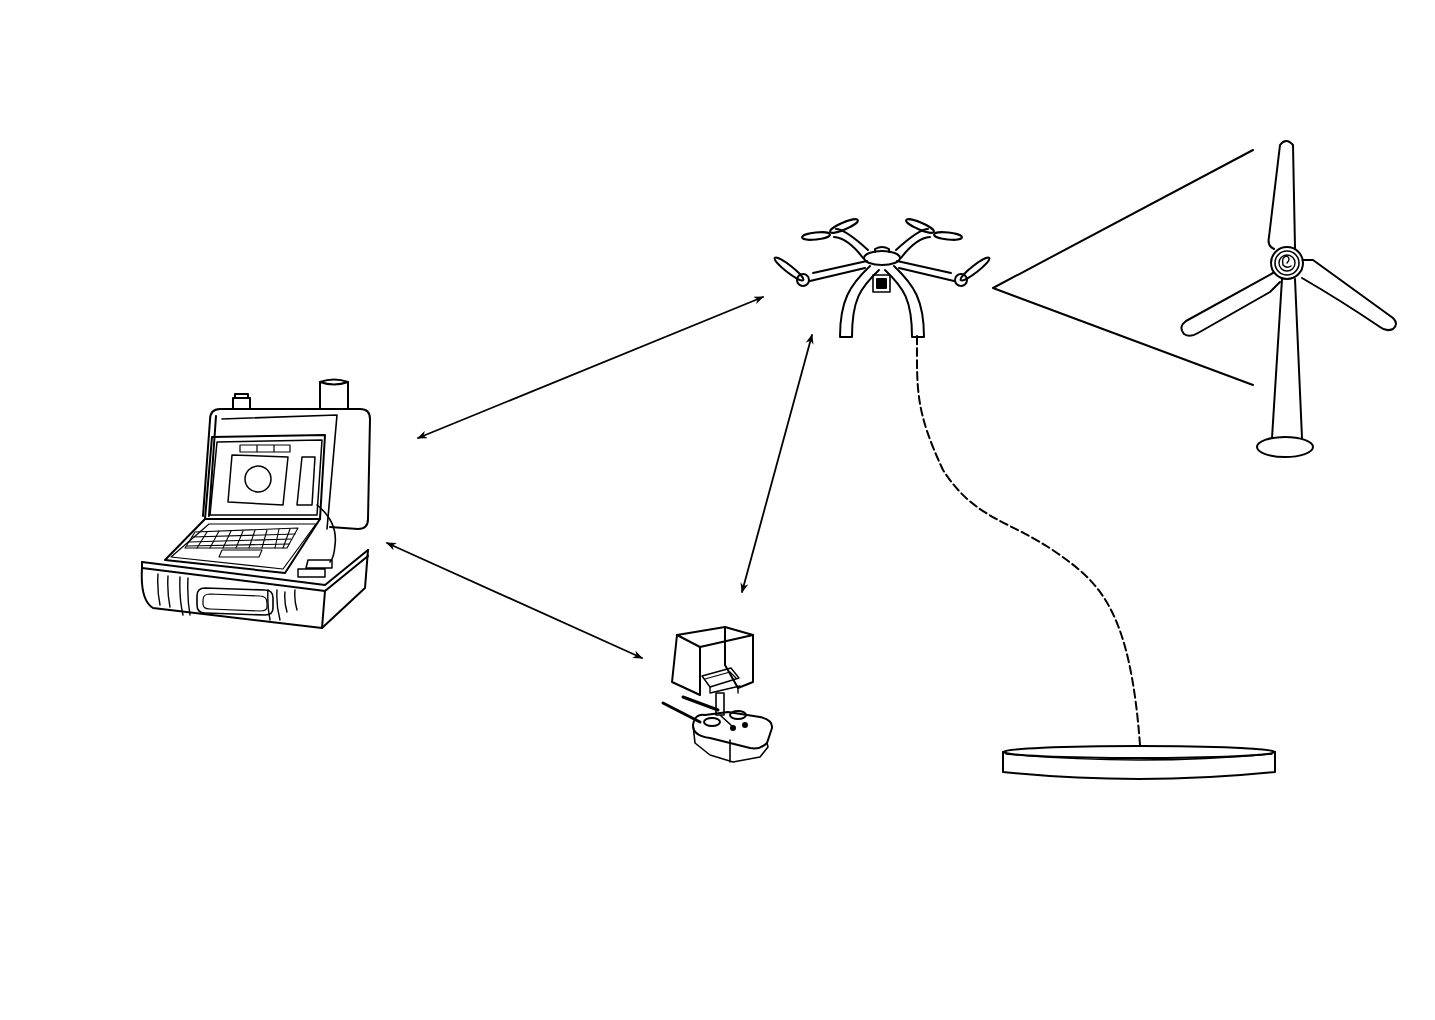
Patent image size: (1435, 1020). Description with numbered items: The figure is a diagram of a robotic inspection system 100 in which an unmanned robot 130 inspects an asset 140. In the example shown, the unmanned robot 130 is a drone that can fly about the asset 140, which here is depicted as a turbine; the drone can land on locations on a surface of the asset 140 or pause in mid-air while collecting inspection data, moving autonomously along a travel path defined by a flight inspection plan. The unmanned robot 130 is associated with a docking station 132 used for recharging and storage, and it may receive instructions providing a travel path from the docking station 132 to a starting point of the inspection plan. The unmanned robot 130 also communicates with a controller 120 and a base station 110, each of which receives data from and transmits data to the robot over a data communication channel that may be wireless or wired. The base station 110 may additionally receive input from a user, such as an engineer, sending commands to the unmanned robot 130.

The robotic inspection system 100 is at (1208, 83).
The base station 110 is at (280, 402).
The controller 120 is at (688, 633).
The unmanned robot 130 is at (883, 247).
The docking station 132 is at (1220, 747).
The asset 140 is at (1299, 358).